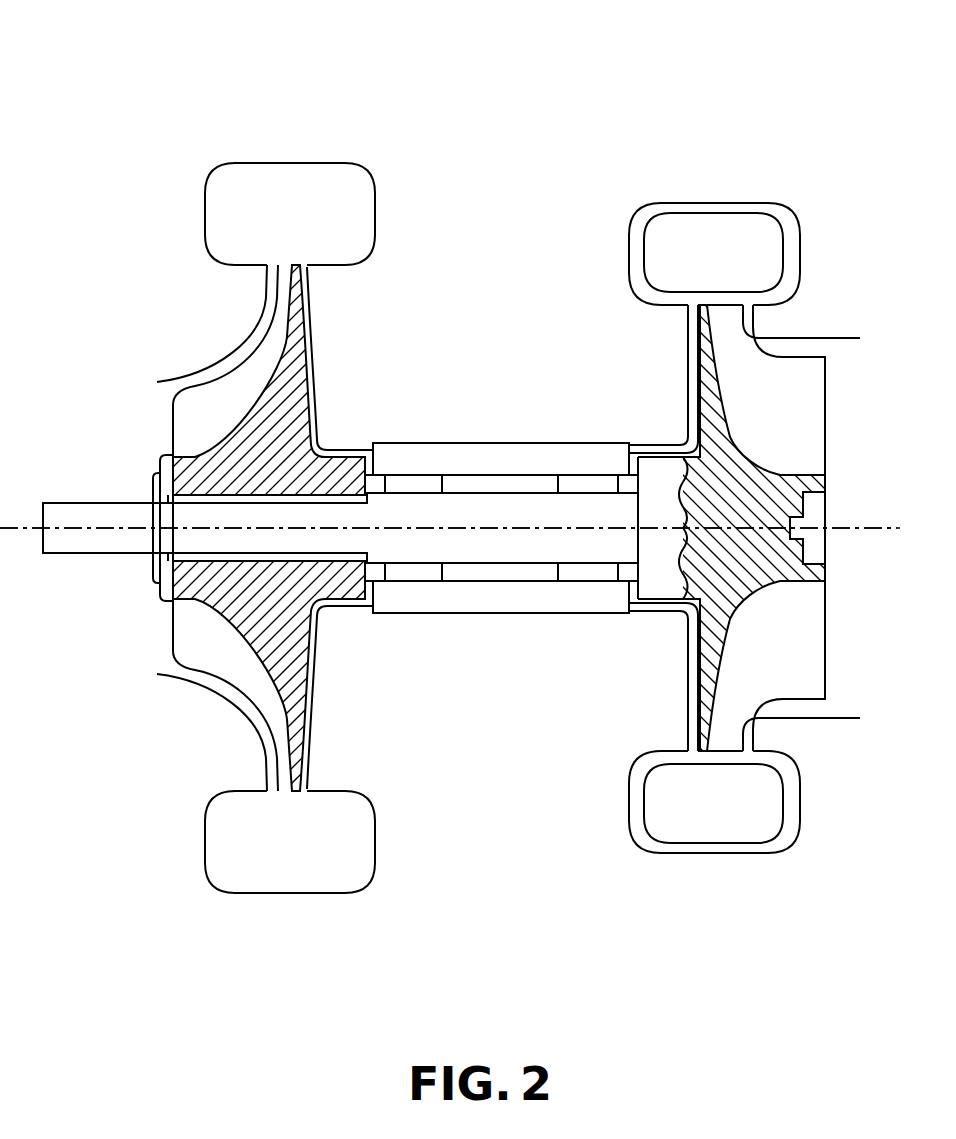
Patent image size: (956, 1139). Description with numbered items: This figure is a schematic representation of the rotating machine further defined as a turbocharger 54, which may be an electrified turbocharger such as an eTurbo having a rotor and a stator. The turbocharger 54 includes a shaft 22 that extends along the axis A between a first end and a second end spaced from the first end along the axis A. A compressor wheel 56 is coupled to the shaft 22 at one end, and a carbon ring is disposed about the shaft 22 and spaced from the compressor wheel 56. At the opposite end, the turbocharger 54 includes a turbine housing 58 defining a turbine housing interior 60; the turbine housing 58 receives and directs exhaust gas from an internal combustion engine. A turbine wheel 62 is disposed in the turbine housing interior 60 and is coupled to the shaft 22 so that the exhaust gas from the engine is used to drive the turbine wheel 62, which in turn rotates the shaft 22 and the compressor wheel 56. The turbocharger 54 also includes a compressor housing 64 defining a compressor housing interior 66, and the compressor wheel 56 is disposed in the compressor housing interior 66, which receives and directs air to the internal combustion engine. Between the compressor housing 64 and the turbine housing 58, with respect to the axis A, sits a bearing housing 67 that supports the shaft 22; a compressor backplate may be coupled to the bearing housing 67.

The turbocharger 54 is at (120, 110).
The compressor wheel 56 is at (193, 575).
The turbine housing 58 is at (780, 250).
The turbine housing interior 60 is at (758, 327).
The turbine wheel 62 is at (717, 470).
The compressor housing 64 is at (267, 296).
The compressor housing interior 66 is at (173, 422).
The bearing housing 67 is at (503, 457).
The shaft 22 is at (457, 567).
The axis A is at (837, 530).